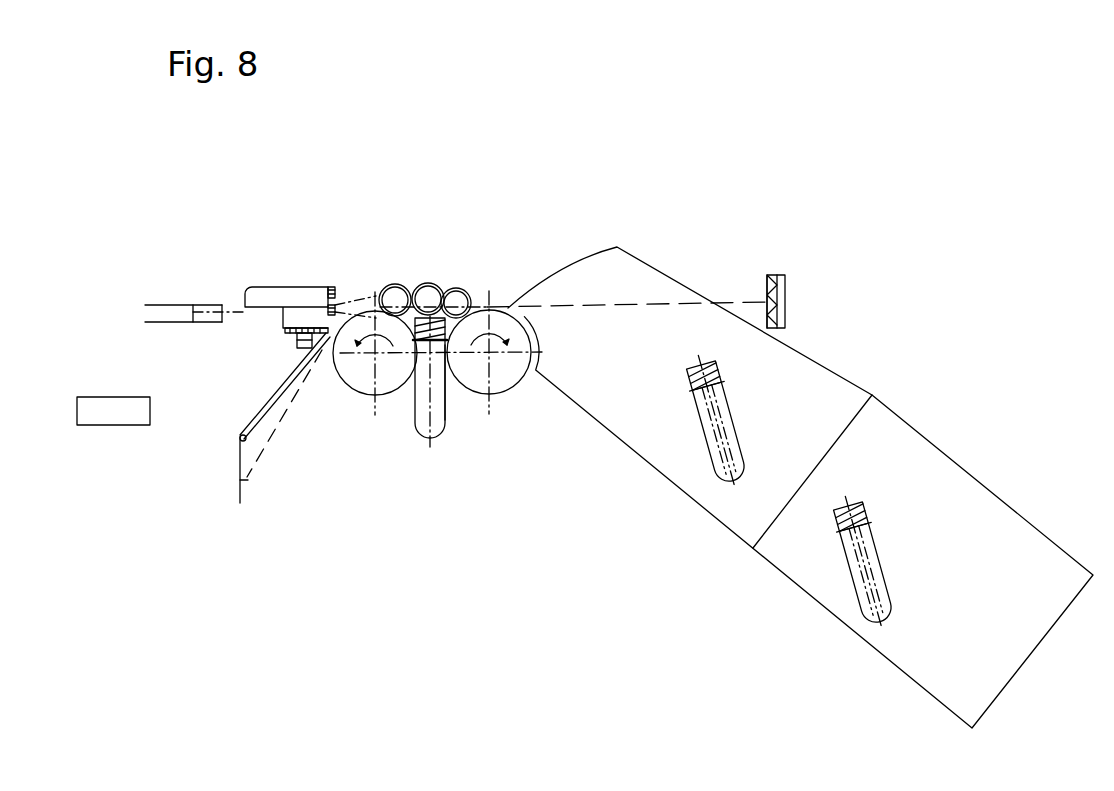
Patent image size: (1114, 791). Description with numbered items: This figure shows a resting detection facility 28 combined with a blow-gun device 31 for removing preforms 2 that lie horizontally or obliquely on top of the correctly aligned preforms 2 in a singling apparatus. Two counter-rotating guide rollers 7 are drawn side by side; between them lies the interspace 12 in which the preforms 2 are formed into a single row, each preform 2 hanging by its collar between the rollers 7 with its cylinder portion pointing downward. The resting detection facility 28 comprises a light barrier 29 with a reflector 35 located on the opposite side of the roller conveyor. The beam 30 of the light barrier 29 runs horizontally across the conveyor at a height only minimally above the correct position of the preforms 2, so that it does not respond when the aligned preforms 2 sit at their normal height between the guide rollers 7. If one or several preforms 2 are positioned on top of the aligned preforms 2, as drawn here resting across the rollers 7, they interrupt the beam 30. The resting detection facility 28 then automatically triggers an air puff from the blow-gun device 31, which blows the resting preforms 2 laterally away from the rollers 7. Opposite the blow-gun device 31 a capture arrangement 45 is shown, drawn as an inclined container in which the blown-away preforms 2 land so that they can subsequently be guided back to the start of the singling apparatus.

The preform 2 is at (393, 290).
The roller 7 is at (357, 375).
The interspace 12 is at (457, 393).
The resting detection facility 28 is at (133, 410).
The light barrier 29 is at (183, 308).
The beam 30 is at (527, 307).
The blow-gun device 31 is at (278, 295).
The reflector 35 is at (772, 277).
The capture arrangement 45 is at (912, 458).